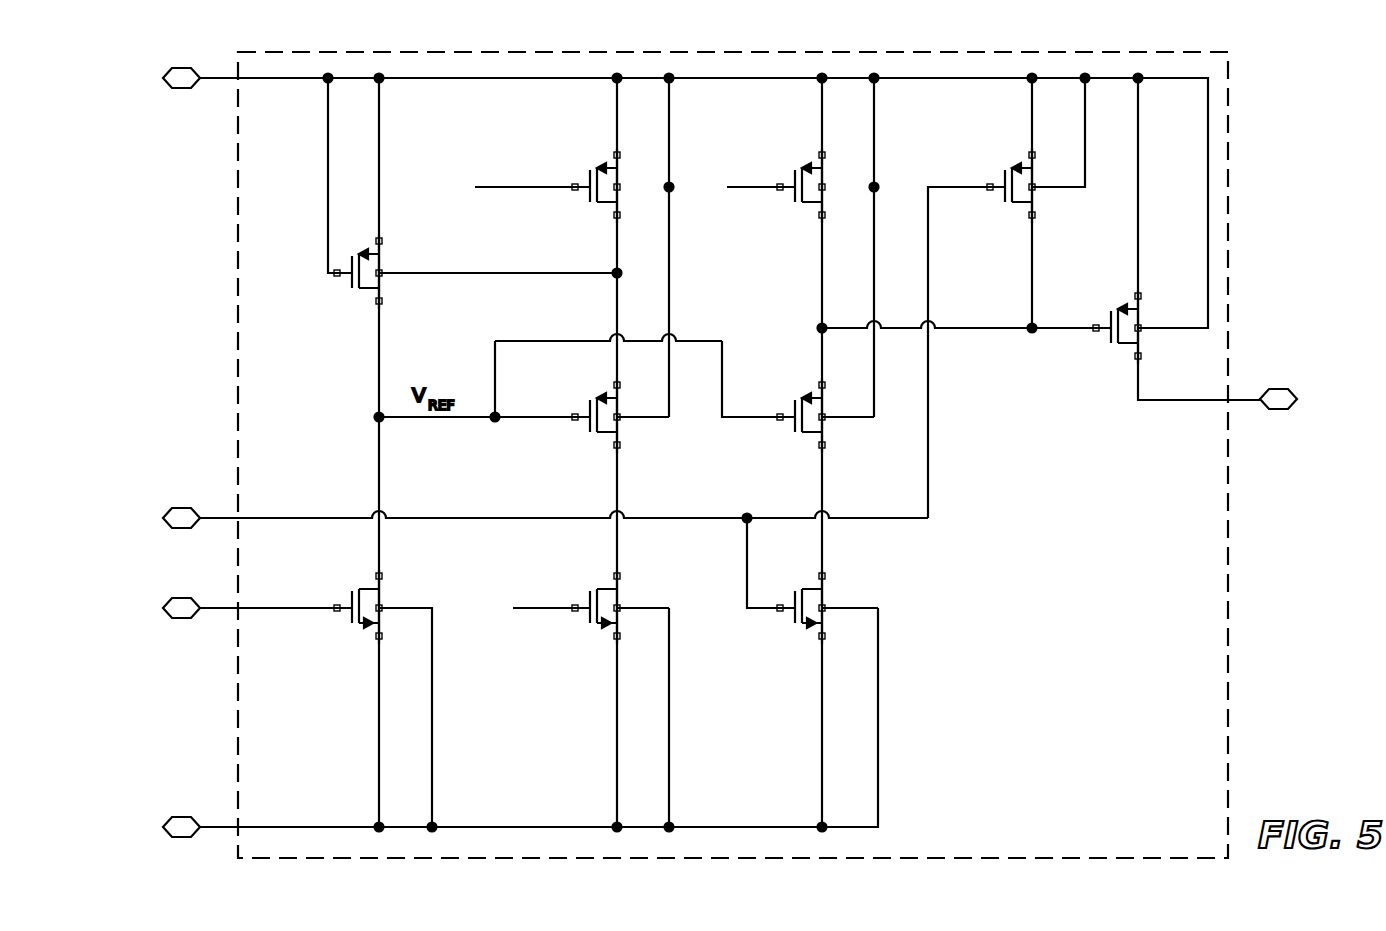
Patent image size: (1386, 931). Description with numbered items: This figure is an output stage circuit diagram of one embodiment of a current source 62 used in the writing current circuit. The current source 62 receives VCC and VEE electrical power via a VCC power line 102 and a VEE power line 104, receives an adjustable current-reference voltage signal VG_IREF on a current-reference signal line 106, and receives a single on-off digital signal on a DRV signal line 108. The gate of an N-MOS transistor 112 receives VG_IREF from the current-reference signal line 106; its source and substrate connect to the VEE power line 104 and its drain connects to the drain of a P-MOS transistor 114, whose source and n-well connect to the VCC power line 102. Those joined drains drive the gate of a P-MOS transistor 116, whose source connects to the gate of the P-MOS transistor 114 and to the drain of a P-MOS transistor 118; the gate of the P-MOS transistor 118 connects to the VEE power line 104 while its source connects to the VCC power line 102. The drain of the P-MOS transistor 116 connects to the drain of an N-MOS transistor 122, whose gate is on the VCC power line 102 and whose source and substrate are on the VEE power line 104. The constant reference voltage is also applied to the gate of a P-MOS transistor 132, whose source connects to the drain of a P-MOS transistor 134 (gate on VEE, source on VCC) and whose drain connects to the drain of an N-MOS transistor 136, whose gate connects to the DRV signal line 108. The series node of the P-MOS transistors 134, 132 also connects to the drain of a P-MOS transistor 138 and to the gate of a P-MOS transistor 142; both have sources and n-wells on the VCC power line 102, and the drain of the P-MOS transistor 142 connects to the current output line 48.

The current output line 48 is at (1246, 400).
The current source 62 is at (1228, 517).
The VCC power line 102 is at (228, 80).
The VEE power line 104 is at (220, 825).
The current-reference signal line 106 is at (220, 611).
The DRV signal line 108 is at (223, 516).
The N-MOS transistor 112 is at (376, 595).
The P-MOS transistor 114 is at (402, 300).
The P-MOS transistor 116 is at (606, 432).
The P-MOS transistor 118 is at (604, 204).
The N-MOS transistor 122 is at (606, 628).
The P-MOS transistor 132 is at (810, 432).
The P-MOS transistor 134 is at (809, 204).
The N-MOS transistor 136 is at (811, 628).
The P-MOS transistor 138 is at (1018, 204).
The P-MOS transistor 142 is at (1124, 345).